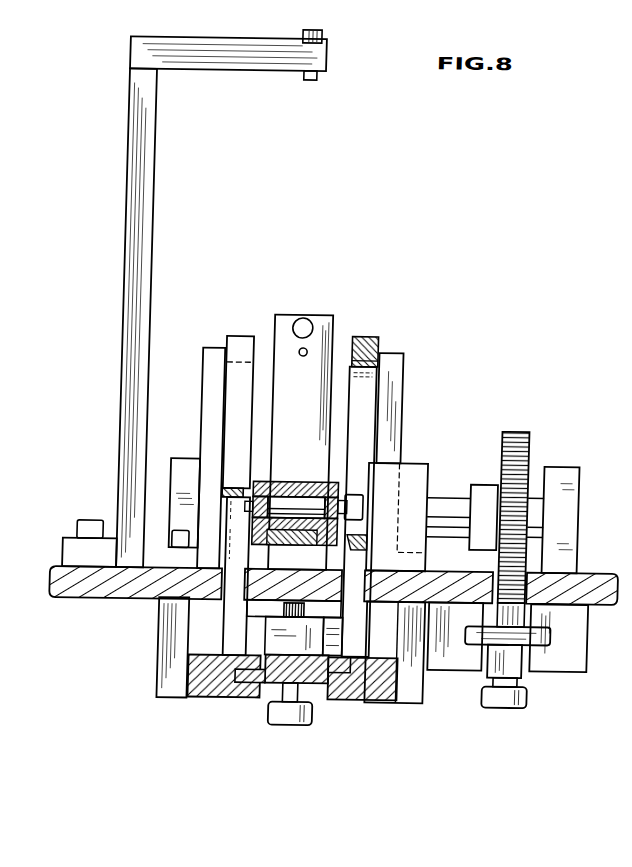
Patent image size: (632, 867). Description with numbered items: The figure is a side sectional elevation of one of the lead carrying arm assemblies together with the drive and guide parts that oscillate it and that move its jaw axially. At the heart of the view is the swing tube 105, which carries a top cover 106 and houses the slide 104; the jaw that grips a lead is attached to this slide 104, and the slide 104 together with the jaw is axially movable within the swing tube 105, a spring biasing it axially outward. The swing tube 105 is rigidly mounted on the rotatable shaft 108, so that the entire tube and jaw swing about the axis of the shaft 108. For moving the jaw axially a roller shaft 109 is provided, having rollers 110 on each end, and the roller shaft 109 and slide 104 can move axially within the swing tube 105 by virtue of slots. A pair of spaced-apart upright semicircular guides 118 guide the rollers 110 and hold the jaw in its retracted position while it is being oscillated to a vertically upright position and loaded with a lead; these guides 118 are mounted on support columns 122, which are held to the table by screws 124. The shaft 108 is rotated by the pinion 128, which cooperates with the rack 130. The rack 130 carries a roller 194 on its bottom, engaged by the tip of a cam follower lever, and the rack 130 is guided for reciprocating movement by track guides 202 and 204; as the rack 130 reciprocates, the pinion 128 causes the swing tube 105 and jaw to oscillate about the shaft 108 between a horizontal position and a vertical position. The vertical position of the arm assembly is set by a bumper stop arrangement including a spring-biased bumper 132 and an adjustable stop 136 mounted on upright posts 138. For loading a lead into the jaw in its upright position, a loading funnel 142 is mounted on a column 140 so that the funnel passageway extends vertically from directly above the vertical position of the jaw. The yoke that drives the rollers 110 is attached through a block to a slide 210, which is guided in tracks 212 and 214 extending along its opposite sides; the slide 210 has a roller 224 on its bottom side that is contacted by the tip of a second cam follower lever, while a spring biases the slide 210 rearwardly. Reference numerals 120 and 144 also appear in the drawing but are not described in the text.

The slide 104 is at (313, 533).
The swing tube 105 is at (368, 542).
The top cover 106 is at (260, 482).
The rotatable shaft 108 is at (441, 521).
The roller shaft 109 is at (300, 503).
The rollers 110 is at (355, 499).
The upright semicircular guides 118 is at (235, 336).
The vertical bar 120 is at (363, 336).
The support columns 122 is at (205, 409).
The screws 124 is at (175, 532).
The pinion 128 is at (526, 457).
The rack 130 is at (525, 614).
The bumper 132 is at (302, 317).
The adjustable stop 136 is at (298, 357).
The upright posts 138 is at (286, 427).
The column 140 is at (145, 225).
The loading funnel 142 is at (299, 35).
The stop block 144 is at (93, 525).
The roller 194 is at (503, 699).
The track guide 202 is at (580, 666).
The track guide 204 is at (477, 663).
The slide 210 is at (275, 683).
The track 212 is at (217, 684).
The track 214 is at (373, 687).
The roller 224 is at (309, 726).